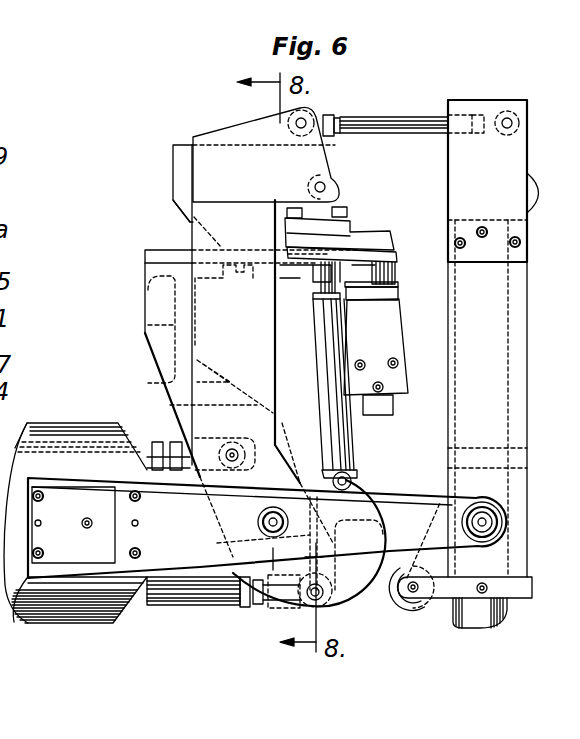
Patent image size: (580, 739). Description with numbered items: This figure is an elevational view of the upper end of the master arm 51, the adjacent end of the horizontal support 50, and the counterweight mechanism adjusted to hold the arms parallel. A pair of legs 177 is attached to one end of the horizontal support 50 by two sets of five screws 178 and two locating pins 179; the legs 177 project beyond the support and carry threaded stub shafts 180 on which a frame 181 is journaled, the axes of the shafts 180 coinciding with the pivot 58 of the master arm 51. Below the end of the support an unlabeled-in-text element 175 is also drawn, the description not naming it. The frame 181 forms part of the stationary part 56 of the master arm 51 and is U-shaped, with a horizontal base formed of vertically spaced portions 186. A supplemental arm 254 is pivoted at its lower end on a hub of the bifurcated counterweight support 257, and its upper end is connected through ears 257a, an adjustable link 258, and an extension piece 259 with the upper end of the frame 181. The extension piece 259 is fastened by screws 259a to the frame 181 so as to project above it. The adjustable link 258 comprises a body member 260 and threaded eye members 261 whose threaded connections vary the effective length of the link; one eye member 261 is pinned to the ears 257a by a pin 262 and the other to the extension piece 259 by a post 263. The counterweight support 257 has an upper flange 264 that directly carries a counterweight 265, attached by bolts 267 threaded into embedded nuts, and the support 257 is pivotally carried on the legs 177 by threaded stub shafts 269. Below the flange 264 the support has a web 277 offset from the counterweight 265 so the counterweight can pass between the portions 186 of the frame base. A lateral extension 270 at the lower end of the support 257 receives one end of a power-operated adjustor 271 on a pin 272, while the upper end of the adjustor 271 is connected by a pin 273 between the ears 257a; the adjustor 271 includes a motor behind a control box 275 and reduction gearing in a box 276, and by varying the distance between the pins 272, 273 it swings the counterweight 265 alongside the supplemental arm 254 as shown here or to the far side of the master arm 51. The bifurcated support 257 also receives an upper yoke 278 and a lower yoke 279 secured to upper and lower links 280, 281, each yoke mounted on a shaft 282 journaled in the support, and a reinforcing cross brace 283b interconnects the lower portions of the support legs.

The horizontal support 50 is at (70, 592).
The master arm 51 is at (473, 74).
The stationary part of the master arm 56 is at (381, 95).
The pivot of the master arm 58 is at (494, 522).
The foot pad 175 is at (467, 622).
The legs 177 is at (185, 520).
The screws 178 is at (130, 496).
The locating pins 179 is at (132, 524).
The threaded stub shafts 180 is at (491, 513).
The frame 181 is at (515, 392).
The vertically spaced portions of the frame base 186 is at (515, 455).
The supplemental arm 254 is at (208, 343).
The counterweight support 257 is at (143, 299).
The ears 257a is at (210, 160).
The adjustable link 258 is at (395, 110).
The extension piece 259 is at (450, 150).
The screws 259a is at (515, 236).
The body member 260 is at (432, 116).
The threaded eye members 261 is at (308, 120).
The pin 262 is at (306, 112).
The post 263 is at (502, 134).
The upper flange 264 is at (162, 250).
The counterweight 265 is at (158, 183).
The bolts 267 is at (300, 277).
The threaded stub shafts 269 is at (267, 518).
The lateral extension 270 is at (362, 500).
The power-operated adjustor 271 is at (377, 259).
The pin 272 is at (358, 470).
The pin 273 is at (315, 187).
The control box 275 is at (393, 323).
The box 276 is at (362, 216).
The web 277 is at (148, 331).
The upper yoke 278 is at (178, 440).
The lower yoke 279 is at (277, 604).
The upper link 280 is at (14, 447).
The lower link 281 is at (172, 590).
The shaft 282 is at (232, 447).
The reinforcing cross brace 283b is at (238, 528).